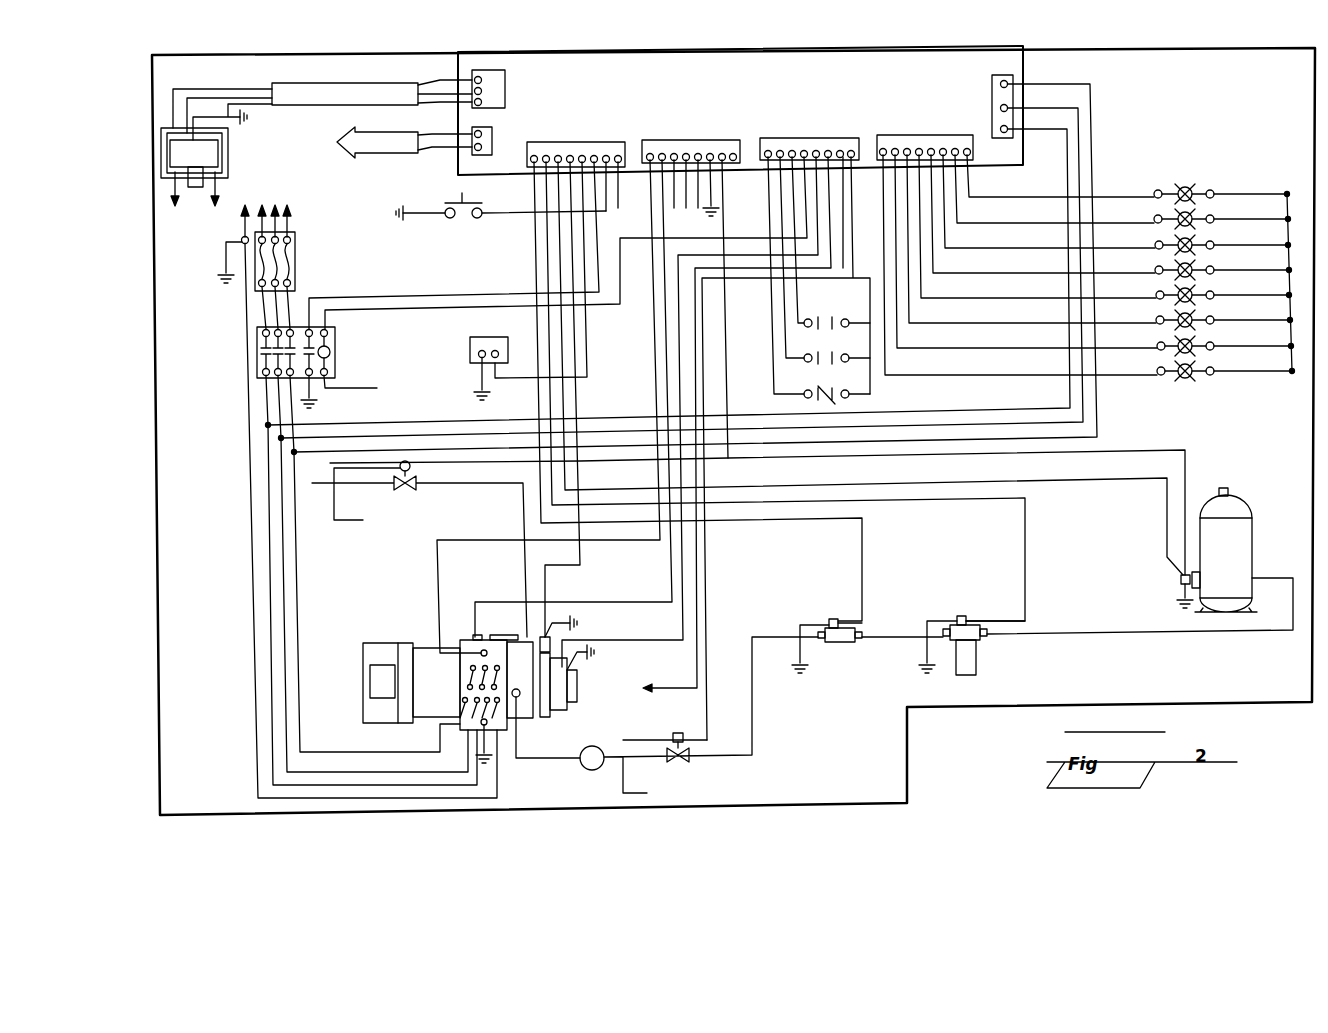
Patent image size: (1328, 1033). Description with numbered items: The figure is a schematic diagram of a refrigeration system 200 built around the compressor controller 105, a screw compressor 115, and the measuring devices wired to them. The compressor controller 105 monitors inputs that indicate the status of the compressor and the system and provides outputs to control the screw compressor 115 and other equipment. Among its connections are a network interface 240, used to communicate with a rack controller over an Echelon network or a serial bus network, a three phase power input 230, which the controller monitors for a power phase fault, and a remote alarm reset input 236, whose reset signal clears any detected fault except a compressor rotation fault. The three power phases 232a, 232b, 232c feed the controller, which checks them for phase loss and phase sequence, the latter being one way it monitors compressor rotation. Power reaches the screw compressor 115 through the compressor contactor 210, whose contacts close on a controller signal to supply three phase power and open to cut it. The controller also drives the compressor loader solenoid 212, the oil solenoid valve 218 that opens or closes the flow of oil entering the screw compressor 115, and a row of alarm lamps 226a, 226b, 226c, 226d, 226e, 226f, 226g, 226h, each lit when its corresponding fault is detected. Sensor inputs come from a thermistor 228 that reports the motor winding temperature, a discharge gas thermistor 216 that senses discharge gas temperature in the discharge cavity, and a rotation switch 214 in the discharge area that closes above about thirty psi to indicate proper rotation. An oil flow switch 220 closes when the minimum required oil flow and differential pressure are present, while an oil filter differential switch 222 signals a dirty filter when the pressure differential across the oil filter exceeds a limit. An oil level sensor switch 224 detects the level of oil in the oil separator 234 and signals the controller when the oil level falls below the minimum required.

The compressor controller 105 is at (1025, 67).
The network interface 240 is at (493, 130).
The three phase power input 230 is at (990, 108).
The remote alarm reset input 236 is at (473, 222).
The compressor contactor 210 is at (255, 355).
The power phase 232a is at (268, 493).
The power phase 232b is at (281, 520).
The power phase 232c is at (296, 562).
The screw compressor 115 is at (432, 642).
The thermistor 228 is at (482, 650).
The compressor loader solenoid 212 is at (478, 636).
The rotation switch 214 is at (550, 636).
The discharge gas thermistor 216 is at (573, 680).
The oil solenoid valve 218 is at (678, 762).
The oil flow switch 220 is at (835, 645).
The oil filter differential switch 222 is at (960, 615).
The oil level sensor switch 224 is at (1180, 578).
The oil separator 234 is at (1252, 528).
The alarm lamp 226a is at (1180, 183).
The alarm lamp 226b is at (1208, 222).
The alarm lamp 226c is at (1208, 250).
The alarm lamp 226d is at (1208, 275).
The alarm lamp 226e is at (1208, 300).
The alarm lamp 226f is at (1208, 325).
The alarm lamp 226g is at (1208, 351).
The alarm lamp 226h is at (1207, 377).
The refrigeration system 200 is at (940, 711).